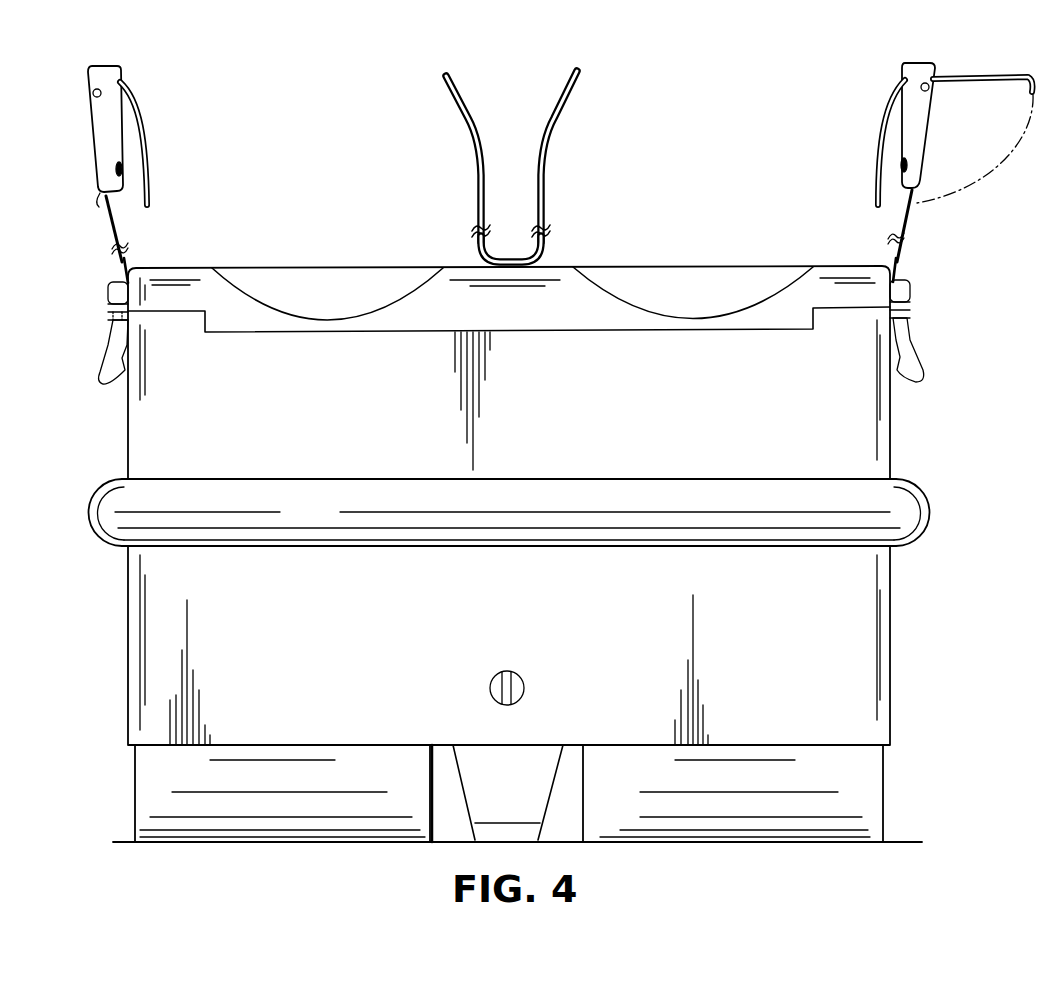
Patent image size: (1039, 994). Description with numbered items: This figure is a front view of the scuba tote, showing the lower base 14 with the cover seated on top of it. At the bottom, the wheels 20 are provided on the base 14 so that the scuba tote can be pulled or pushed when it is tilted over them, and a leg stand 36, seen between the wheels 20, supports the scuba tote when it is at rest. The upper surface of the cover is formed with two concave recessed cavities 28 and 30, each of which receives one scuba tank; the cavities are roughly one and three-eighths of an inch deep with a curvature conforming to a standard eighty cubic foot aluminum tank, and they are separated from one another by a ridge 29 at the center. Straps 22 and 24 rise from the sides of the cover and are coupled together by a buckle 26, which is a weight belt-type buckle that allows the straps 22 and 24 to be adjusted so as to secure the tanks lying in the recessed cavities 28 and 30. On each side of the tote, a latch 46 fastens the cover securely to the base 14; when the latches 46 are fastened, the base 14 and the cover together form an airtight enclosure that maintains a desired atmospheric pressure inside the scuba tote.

The base 14 is at (868, 617).
The wheels 20 is at (135, 788).
The strap 22 is at (556, 118).
The strap 24 is at (465, 118).
The buckle 26 is at (90, 118).
The recessed cavity 28 is at (693, 318).
The ridge 29 is at (553, 267).
The recessed cavity 30 is at (320, 320).
The leg stand 36 is at (525, 760).
The latch 46 is at (108, 350).